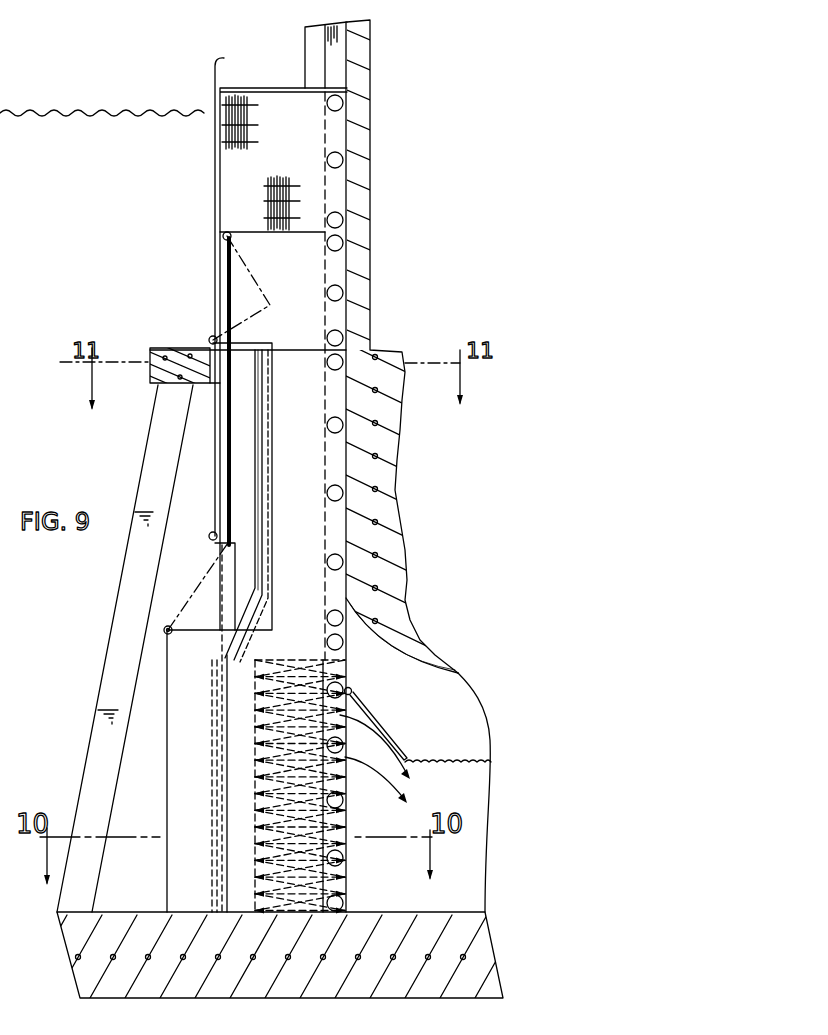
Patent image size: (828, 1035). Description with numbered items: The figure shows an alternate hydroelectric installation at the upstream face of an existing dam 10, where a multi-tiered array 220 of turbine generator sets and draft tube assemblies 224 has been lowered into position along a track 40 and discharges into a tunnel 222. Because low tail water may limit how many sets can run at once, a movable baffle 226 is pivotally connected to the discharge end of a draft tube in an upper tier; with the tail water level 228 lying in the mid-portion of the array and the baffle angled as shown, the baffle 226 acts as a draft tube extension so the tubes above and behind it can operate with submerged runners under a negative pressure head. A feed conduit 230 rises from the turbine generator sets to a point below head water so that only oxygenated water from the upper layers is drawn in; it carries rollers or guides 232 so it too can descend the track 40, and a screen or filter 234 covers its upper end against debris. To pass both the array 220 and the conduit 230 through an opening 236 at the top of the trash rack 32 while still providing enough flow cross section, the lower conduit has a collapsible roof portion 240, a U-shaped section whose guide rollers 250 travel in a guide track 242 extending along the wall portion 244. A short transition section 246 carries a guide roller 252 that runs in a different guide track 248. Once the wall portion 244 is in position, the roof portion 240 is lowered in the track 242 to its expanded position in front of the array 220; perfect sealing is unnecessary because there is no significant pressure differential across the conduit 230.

The dam 10 is at (418, 210).
The trash rack 32 is at (153, 485).
The track 40 is at (340, 53).
The multi-tiered array of turbine generator sets 220 is at (249, 744).
The tunnel 222 is at (461, 693).
The draft tube assemblies 224 is at (258, 825).
The movable baffle 226 is at (375, 712).
The tail water level 228 is at (440, 762).
The feed conduit 230 is at (253, 78).
The rollers or guides 232 is at (337, 293).
The screen or filter 234 is at (318, 150).
The opening 236 is at (211, 342).
The collapsible roof portion 240 is at (272, 602).
The guide track 242 is at (265, 460).
The wall portion 244 is at (318, 430).
The transition section 246 is at (250, 262).
The guide track 248 is at (222, 465).
The guide rollers 250 is at (262, 372).
The guide roller 252 is at (226, 241).